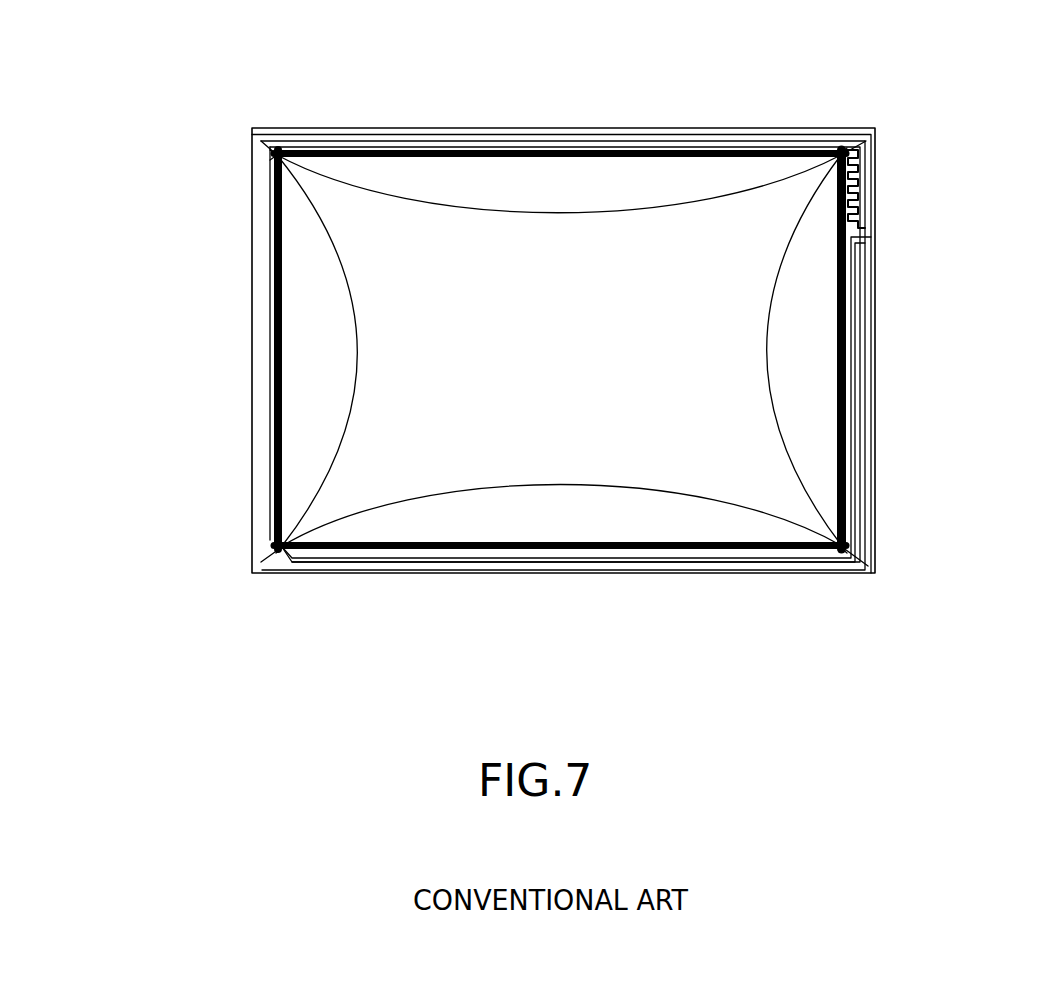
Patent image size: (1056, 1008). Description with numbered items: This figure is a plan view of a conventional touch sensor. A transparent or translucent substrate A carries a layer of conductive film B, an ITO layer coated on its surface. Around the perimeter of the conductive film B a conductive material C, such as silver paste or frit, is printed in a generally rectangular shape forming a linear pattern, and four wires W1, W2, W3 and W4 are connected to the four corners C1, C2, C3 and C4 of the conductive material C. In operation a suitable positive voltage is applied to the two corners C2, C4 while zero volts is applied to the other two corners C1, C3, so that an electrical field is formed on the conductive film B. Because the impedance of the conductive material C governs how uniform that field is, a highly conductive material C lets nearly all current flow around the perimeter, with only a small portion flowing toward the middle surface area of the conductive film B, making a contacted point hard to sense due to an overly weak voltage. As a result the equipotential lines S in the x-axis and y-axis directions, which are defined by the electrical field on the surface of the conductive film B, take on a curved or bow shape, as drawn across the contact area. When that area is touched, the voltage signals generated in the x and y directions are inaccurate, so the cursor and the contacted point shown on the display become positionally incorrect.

The substrate A is at (872, 332).
The conductive film B is at (715, 482).
The equipotential lines S is at (555, 213).
The conductive material C is at (273, 300).
The corner C1 is at (843, 150).
The corner C2 is at (842, 548).
The corner C3 is at (276, 152).
The corner C4 is at (283, 556).
The wire W1 is at (855, 152).
The wire W2 is at (841, 548).
The wire W3 is at (277, 154).
The wire W4 is at (281, 547).